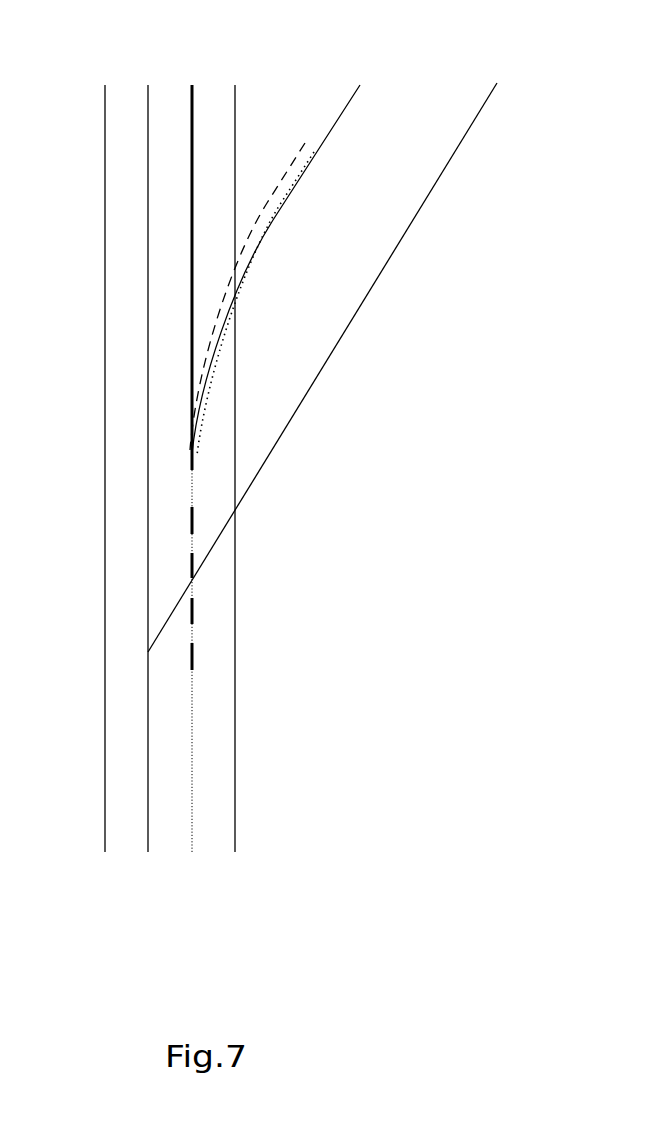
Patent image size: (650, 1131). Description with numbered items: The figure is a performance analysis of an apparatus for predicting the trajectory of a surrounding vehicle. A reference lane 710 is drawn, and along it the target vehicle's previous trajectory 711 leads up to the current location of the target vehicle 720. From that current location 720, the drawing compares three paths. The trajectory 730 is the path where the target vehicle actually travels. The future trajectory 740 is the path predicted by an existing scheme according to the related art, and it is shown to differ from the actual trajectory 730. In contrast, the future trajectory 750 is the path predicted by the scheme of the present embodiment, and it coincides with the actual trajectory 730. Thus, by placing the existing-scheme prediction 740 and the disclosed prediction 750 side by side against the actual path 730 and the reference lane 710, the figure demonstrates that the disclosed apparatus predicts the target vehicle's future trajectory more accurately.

The reference lane 710 is at (347, 98).
The previous trajectory of the target vehicle 711 is at (191, 565).
The current location of the target vehicle 720 is at (191, 462).
The trajectory where the target vehicle travels actually 730 is at (291, 176).
The future trajectory of the target vehicle predicted in an existing scheme 740 is at (192, 85).
The future trajectory of the target vehicle predicted in the disclosed scheme 750 is at (297, 192).